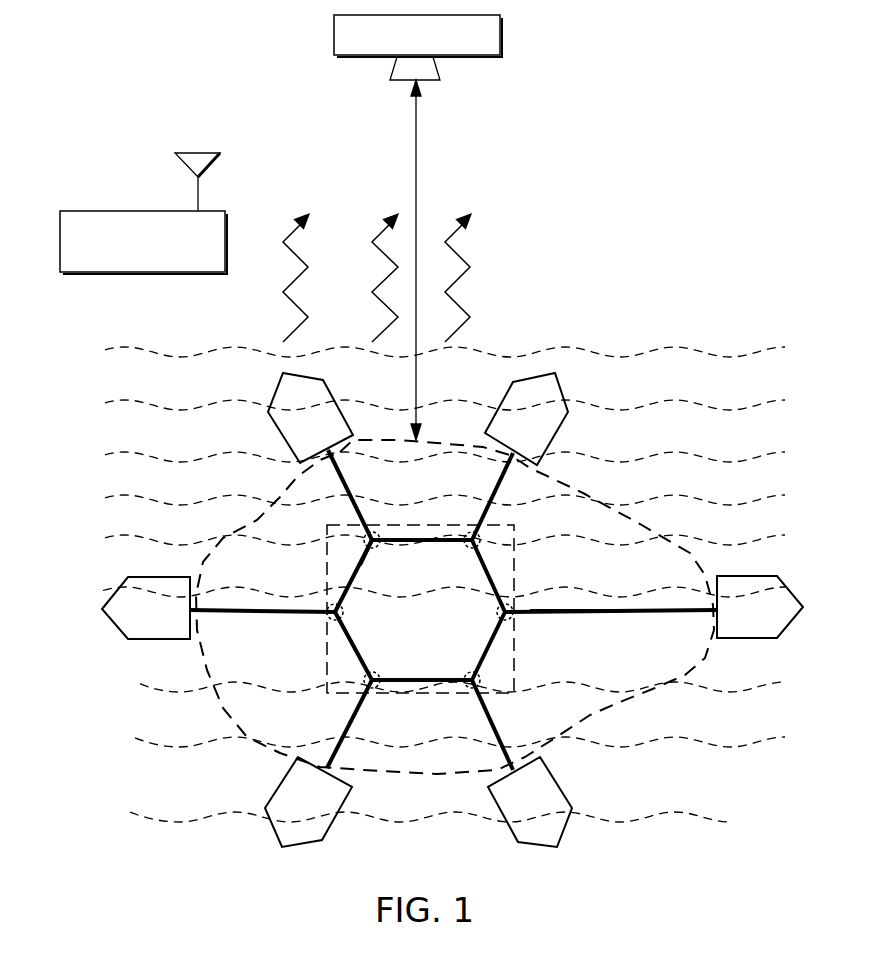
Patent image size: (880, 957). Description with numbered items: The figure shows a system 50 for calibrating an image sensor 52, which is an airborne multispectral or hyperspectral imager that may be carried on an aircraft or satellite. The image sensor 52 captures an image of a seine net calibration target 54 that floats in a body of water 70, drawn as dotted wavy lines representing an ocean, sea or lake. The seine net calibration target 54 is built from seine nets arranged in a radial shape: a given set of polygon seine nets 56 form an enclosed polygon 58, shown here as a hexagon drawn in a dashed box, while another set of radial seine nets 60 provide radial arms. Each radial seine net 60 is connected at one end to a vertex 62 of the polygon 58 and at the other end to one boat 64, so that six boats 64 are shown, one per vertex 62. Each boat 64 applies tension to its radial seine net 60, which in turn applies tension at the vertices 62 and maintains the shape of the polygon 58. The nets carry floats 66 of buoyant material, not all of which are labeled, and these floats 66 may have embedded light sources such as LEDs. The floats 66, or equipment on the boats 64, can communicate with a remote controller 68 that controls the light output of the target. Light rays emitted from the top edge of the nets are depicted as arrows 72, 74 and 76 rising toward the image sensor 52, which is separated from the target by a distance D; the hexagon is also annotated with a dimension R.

The system 50 is at (555, 161).
The image sensor 52 is at (334, 35).
The seine net calibration target 54 is at (597, 497).
The polygon seine net 56 is at (400, 544).
The polygon 58 is at (516, 572).
The radial seine net 60 is at (352, 492).
The vertex 62 is at (374, 533).
The boat 64 is at (337, 399).
The float 66 is at (355, 560).
The remote controller 68 is at (60, 241).
The body of water 70 is at (708, 355).
The arrow 72 is at (292, 230).
The arrow 74 is at (381, 230).
The arrow 76 is at (466, 258).
The distance D is at (416, 177).
The radius R is at (412, 596).